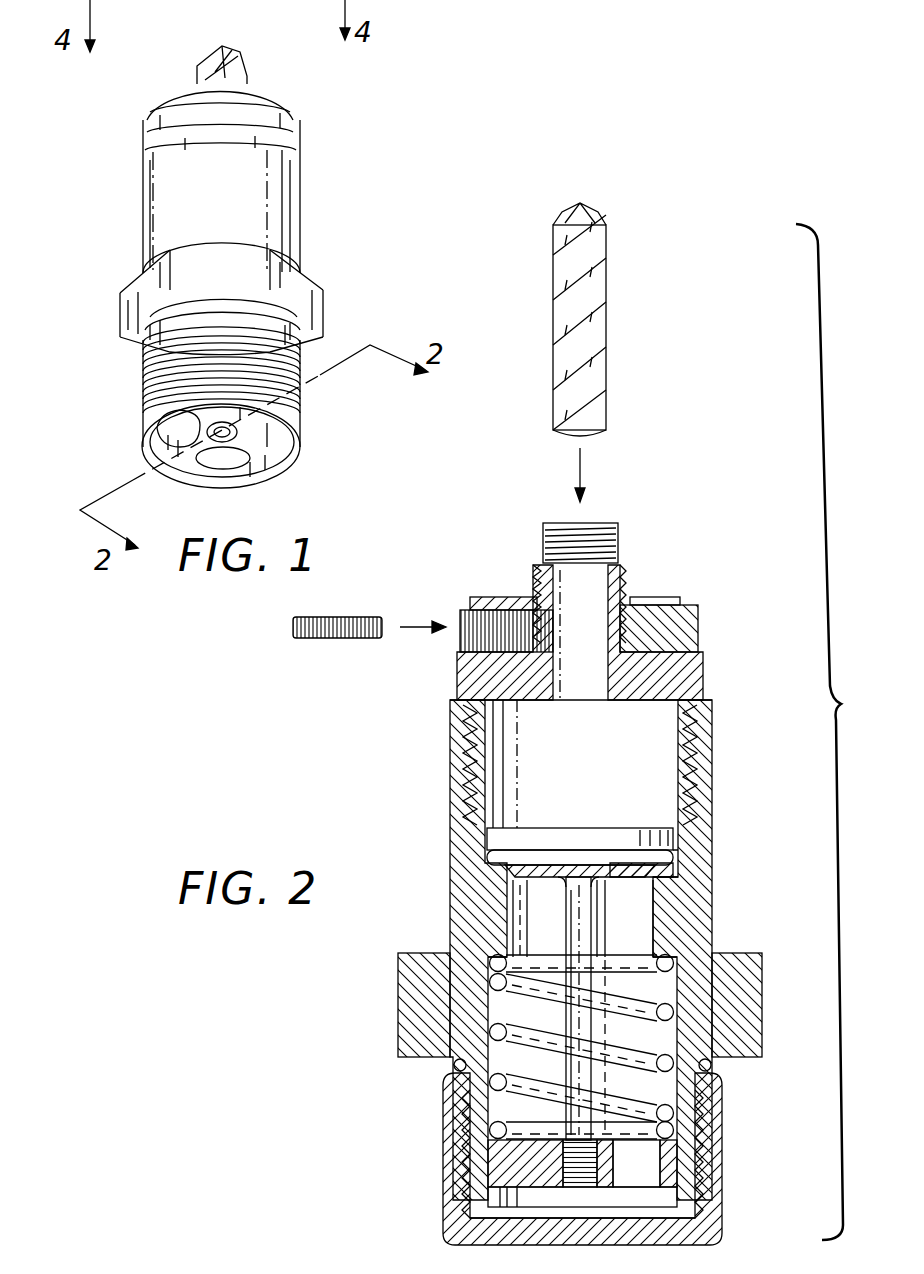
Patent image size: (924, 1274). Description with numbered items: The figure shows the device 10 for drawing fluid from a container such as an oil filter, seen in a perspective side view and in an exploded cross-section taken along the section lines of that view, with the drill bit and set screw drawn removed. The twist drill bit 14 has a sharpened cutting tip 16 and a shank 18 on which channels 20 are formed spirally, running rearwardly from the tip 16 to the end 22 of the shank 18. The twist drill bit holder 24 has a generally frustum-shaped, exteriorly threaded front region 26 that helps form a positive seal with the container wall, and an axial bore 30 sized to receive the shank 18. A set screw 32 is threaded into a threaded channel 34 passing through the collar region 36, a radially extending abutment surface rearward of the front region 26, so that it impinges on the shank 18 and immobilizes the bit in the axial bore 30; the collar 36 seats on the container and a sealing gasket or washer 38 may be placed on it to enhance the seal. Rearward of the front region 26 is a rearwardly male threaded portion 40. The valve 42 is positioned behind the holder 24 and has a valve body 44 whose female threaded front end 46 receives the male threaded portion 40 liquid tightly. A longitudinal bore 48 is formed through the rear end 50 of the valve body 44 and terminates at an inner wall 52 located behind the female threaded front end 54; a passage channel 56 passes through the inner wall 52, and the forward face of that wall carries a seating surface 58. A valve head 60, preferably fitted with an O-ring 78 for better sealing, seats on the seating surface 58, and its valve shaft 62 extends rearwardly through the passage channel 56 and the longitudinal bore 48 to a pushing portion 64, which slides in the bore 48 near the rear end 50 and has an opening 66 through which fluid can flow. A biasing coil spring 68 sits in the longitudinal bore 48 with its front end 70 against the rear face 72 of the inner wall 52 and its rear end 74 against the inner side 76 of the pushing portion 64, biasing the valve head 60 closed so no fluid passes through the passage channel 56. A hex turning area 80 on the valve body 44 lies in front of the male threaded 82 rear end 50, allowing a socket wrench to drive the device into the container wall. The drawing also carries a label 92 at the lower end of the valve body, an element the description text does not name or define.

In FIG. 1, the device 10 is at (118, 216).
In FIG. 2, the device 10 is at (840, 732).
In FIG. 1, the twist drill bit 14 is at (245, 68).
In FIG. 2, the twist drill bit 14 is at (632, 300).
In FIG. 2, the sharpened cutting tip 16 is at (597, 213).
In FIG. 2, the shank 18 is at (553, 270).
In FIG. 2, the channels 20 is at (600, 245).
In FIG. 2, the end of the shank 22 is at (605, 440).
In FIG. 2, the twist drill bit holder 24 is at (440, 670).
In FIG. 2, the front region 26 is at (622, 536).
In FIG. 2, the axial bore 30 is at (566, 582).
In FIG. 2, the set screw 32 is at (320, 636).
In FIG. 2, the threaded channel 34 is at (465, 620).
In FIG. 1, the collar region 36 is at (290, 118).
In FIG. 2, the collar region 36 is at (505, 600).
In FIG. 2, the sealing gasket or washer 38 is at (660, 600).
In FIG. 2, the rearwardly male threaded portion 40 is at (706, 704).
In FIG. 2, the valve 42 is at (726, 770).
In FIG. 2, the valve body 44 is at (680, 870).
In FIG. 2, the female threaded front end 46 is at (692, 748).
In FIG. 2, the longitudinal bore 48 is at (715, 1090).
In FIG. 1, the rear end 50 is at (140, 375).
In FIG. 2, the rear end 50 is at (702, 1180).
In FIG. 2, the inner wall 52 is at (497, 915).
In FIG. 2, the female threaded front end 54 is at (540, 744).
In FIG. 2, the passage channel 56 is at (640, 932).
In FIG. 2, the seating surface 58 is at (495, 862).
In FIG. 2, the valve head 60 is at (700, 852).
In FIG. 2, the valve shaft 62 is at (660, 990).
In FIG. 1, the pushing portion 64 is at (165, 460).
In FIG. 2, the pushing portion 64 is at (495, 1190).
In FIG. 1, the opening 66 is at (300, 455).
In FIG. 2, the opening 66 is at (660, 1165).
In FIG. 2, the biasing coil spring 68 is at (650, 1010).
In FIG. 2, the front end of the spring 70 is at (690, 950).
In FIG. 2, the rear face of the inner wall 72 is at (505, 952).
In FIG. 2, the rear end of the spring 74 is at (500, 1120).
In FIG. 2, the inner side of the pushing portion 76 is at (490, 1165).
In FIG. 2, the O-ring 78 is at (522, 853).
In FIG. 1, the hex turning area 80 is at (128, 302).
In FIG. 2, the hex turning area 80 is at (398, 1000).
In FIG. 2, the male threaded rear end 82 is at (710, 1170).
In FIG. 2, the bottom wall 92 is at (445, 1225).